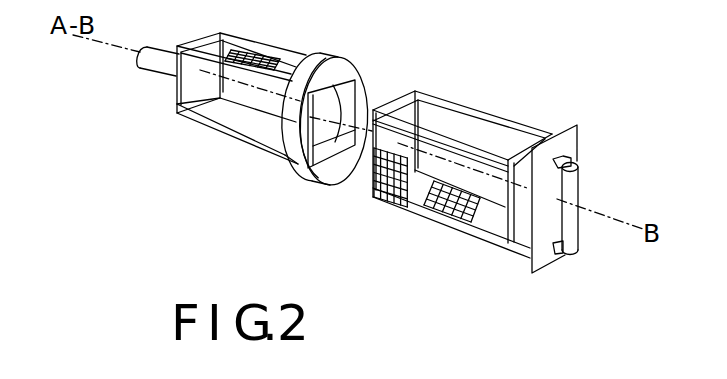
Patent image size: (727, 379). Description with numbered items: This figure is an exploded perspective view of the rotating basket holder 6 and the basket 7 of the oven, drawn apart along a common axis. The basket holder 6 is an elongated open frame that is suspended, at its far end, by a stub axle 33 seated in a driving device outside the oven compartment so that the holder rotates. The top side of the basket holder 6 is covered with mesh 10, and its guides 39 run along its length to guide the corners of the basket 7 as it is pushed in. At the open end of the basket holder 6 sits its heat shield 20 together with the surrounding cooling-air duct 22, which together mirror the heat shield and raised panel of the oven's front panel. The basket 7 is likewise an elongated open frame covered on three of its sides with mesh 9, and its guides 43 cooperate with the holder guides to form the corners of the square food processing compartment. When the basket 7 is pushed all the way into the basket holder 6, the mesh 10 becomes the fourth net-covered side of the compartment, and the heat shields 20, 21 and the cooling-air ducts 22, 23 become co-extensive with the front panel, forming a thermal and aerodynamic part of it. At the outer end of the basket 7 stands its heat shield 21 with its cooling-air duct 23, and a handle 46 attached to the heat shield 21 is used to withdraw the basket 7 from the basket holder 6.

The basket holder 6 is at (98, 121).
The basket 7 is at (325, 235).
The mesh 9 is at (373, 192).
The mesh 10 is at (250, 58).
The heat shield 20 is at (281, 150).
The heat shield 21 is at (507, 232).
The cooling-air duct 22 is at (325, 185).
The cooling-air duct 23 is at (531, 265).
The stub axle 33 is at (153, 70).
The guides 39 is at (243, 140).
The guides 43 is at (467, 236).
The handle 46 is at (560, 252).